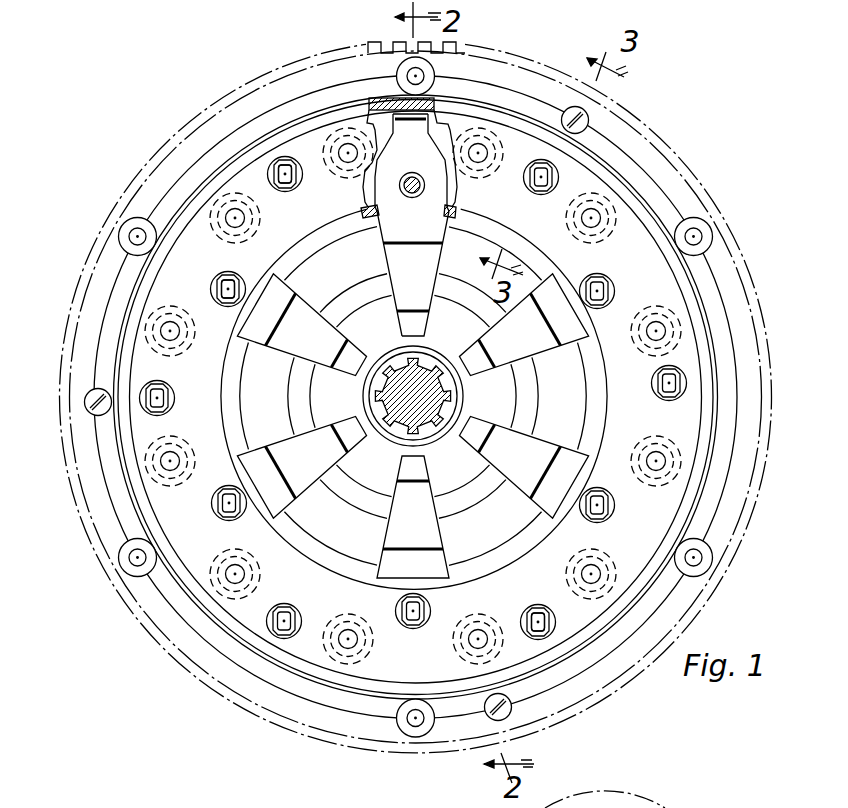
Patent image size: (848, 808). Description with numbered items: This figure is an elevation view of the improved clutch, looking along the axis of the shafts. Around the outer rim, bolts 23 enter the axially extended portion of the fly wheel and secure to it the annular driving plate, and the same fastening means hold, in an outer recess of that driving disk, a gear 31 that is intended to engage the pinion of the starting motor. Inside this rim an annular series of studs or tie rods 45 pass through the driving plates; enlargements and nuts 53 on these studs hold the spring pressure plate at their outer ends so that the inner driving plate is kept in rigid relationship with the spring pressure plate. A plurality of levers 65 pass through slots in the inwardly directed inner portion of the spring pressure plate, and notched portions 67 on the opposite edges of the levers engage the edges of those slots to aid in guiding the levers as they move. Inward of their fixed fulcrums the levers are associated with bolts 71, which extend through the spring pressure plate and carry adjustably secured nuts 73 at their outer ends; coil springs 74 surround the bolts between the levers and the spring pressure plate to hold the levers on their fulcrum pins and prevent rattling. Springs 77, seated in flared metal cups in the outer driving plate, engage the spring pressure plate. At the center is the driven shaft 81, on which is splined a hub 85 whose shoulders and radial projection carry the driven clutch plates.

The bolts 23 is at (578, 122).
The gear 31 is at (368, 44).
The studs or tie rods 45 is at (292, 167).
The nuts 53 is at (295, 187).
The levers 65 is at (432, 189).
The notched portions 67 is at (371, 219).
The bolts 71 is at (228, 297).
The nuts 73 is at (237, 279).
The coil springs 74 is at (409, 177).
The springs 77 is at (174, 312).
The driven shaft 81 is at (452, 393).
The hub 85 is at (383, 430).